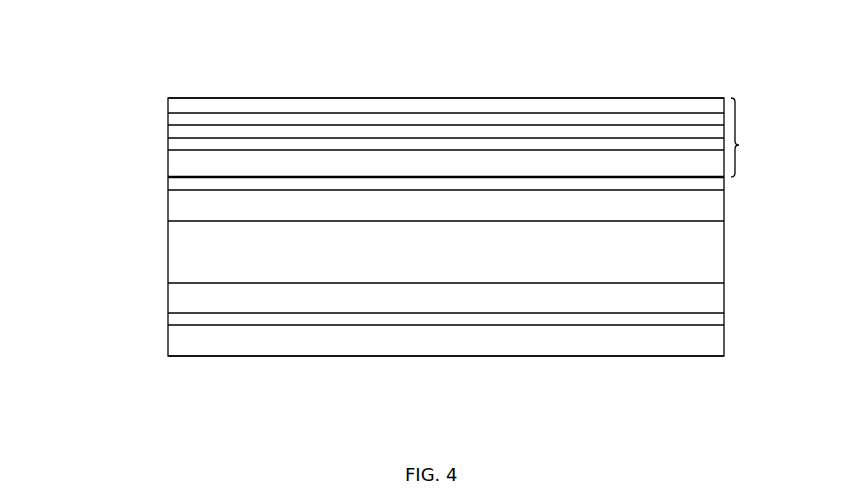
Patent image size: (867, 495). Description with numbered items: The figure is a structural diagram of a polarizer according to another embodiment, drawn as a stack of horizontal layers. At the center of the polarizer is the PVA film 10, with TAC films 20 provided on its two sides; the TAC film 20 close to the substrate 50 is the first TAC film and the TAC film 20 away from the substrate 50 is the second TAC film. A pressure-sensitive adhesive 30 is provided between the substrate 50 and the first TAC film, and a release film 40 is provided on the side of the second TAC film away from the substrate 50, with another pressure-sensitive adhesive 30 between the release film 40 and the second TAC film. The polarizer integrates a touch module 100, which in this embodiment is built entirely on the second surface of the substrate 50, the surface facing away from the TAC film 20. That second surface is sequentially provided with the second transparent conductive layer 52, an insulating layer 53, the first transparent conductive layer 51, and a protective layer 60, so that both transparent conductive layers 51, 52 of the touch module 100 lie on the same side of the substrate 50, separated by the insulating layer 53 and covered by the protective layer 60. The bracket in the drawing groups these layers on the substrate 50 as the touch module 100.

The PVA film 10 is at (702, 245).
The TAC film 20 is at (180, 204).
The pressure-sensitive adhesive 30 is at (182, 184).
The release film 40 is at (188, 348).
The substrate 50 is at (468, 157).
The first transparent conductive layer 51 is at (274, 123).
The second transparent conductive layer 52 is at (556, 147).
The insulating layer 53 is at (342, 135).
The protective layer 60 is at (698, 107).
The touch module 100 is at (758, 137).